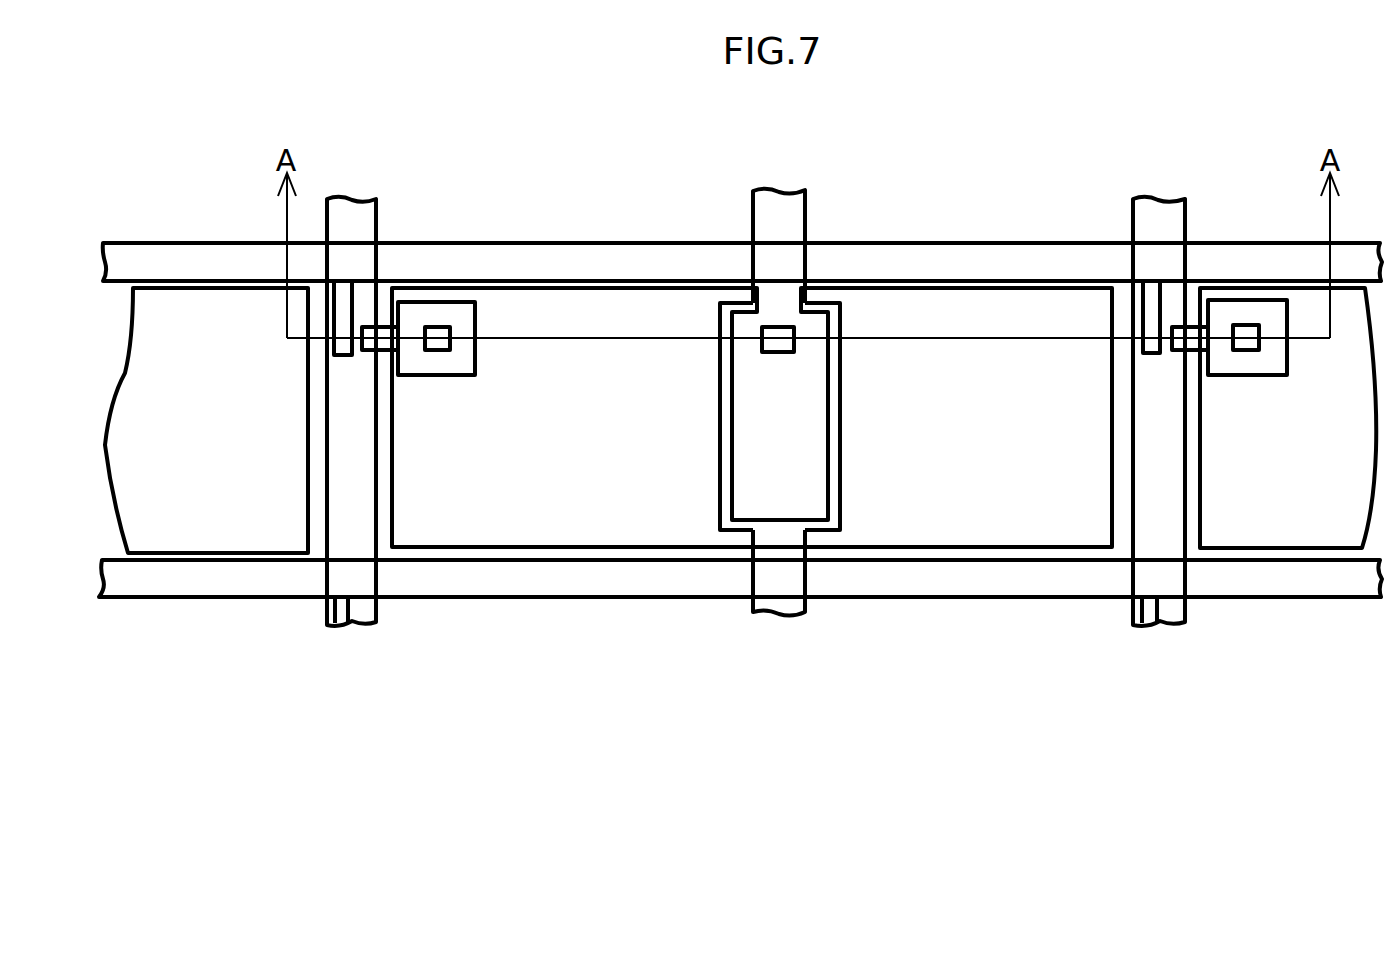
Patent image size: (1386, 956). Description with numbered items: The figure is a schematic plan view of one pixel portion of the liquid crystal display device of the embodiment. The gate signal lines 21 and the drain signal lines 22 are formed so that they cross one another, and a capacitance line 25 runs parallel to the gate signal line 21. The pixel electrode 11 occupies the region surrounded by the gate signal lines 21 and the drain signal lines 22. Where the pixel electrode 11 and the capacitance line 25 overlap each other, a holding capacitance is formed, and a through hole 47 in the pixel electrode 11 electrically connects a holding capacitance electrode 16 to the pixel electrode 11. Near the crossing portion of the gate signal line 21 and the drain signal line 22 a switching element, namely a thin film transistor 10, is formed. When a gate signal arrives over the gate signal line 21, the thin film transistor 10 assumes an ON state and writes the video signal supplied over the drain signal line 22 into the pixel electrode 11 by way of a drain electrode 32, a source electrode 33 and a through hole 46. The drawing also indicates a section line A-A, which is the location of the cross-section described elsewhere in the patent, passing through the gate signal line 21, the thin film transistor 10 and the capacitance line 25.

The switching element 10 is at (432, 313).
The pixel electrode 11 is at (465, 515).
The holding capacitance electrode 16 is at (780, 497).
The gate signal line 21 is at (342, 220).
The drain signal line 22 is at (597, 250).
The capacitance line 25 is at (783, 233).
The drain electrode 32 is at (343, 290).
The source electrode 33 is at (367, 322).
The through hole 46 is at (452, 325).
The through hole 47 is at (782, 327).